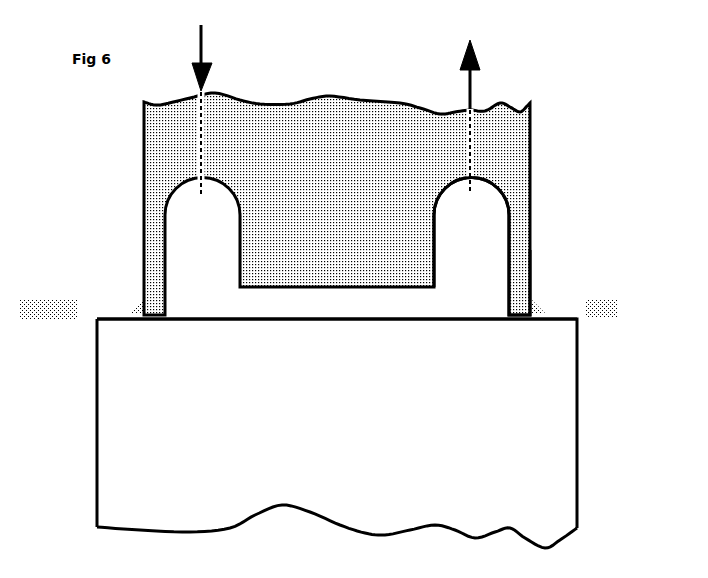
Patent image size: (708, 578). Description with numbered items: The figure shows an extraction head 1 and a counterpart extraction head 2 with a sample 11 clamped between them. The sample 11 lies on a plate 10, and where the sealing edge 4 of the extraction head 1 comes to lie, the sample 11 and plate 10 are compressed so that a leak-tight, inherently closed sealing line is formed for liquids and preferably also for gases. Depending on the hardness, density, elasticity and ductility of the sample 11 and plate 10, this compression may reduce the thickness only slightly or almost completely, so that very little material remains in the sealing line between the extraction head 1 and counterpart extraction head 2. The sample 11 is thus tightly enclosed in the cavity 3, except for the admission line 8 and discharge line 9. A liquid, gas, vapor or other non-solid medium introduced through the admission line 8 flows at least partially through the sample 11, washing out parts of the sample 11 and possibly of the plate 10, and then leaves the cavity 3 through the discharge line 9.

The extraction head 1 is at (319, 192).
The counterpart extraction head 2 is at (342, 421).
The cavity 3 is at (478, 253).
The sealing edge 4 is at (150, 323).
The admission line 8 is at (198, 58).
The discharge line 9 is at (473, 84).
The plate 10 is at (63, 298).
The sample 11 is at (93, 293).